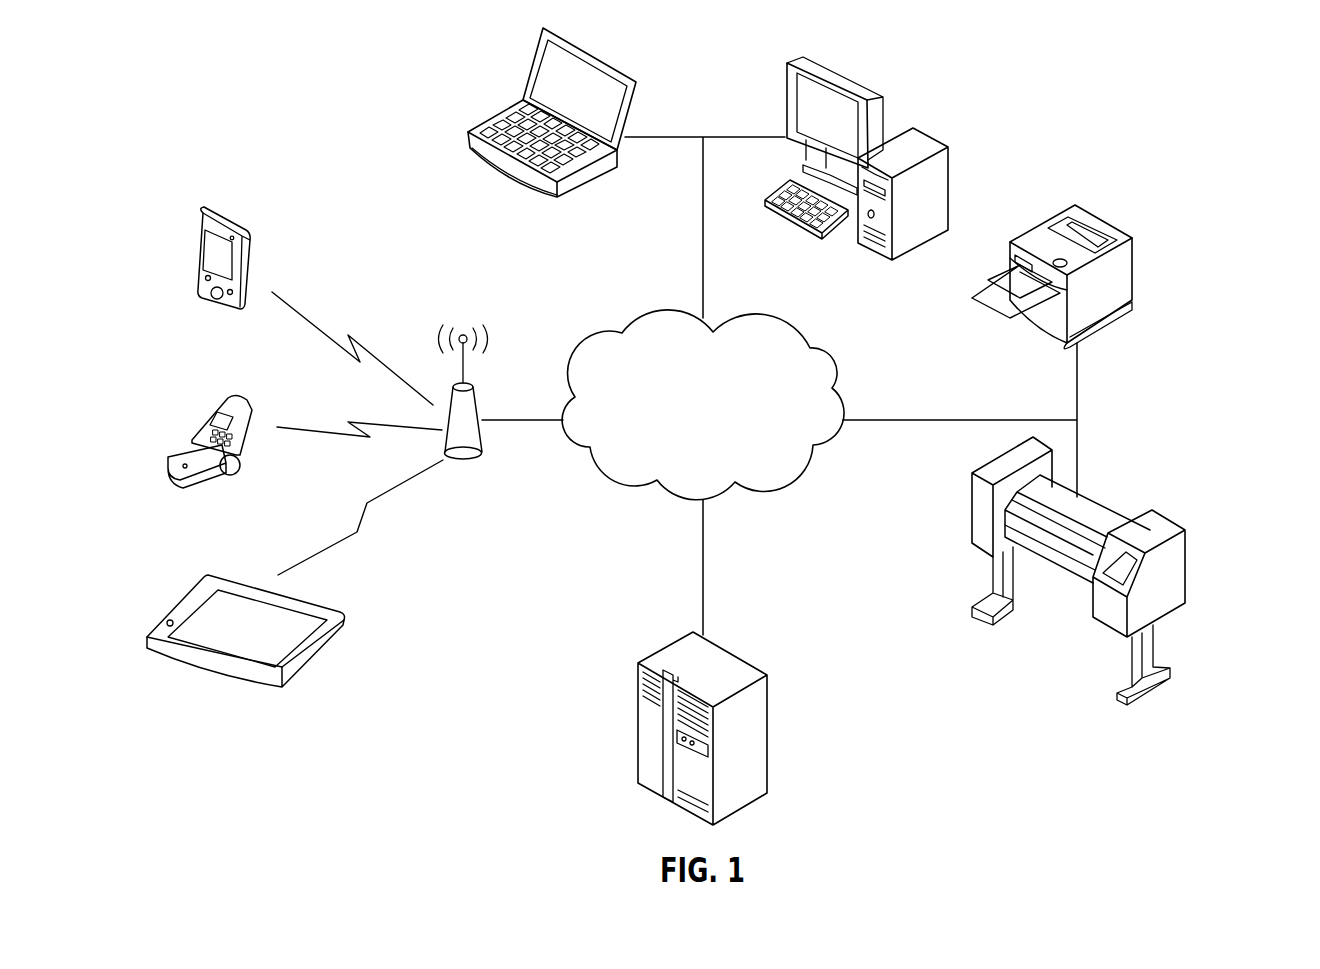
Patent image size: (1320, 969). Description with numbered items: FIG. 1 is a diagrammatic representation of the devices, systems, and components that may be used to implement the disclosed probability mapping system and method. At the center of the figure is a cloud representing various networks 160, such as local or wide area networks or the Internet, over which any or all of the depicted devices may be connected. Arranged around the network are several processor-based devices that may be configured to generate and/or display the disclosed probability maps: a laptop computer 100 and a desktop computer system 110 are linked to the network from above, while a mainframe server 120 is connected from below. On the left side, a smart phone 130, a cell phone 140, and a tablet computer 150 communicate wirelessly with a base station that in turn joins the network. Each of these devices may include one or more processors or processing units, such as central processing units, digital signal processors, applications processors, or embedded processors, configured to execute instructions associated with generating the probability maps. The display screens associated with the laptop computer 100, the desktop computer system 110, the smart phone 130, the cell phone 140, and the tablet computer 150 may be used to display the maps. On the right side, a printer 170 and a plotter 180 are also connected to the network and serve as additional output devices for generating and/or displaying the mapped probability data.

The laptop computer 100 is at (636, 82).
The desktop computer system 110 is at (883, 99).
The mainframe server 120 is at (768, 743).
The smart phone 130 is at (250, 250).
The cell phone 140 is at (250, 445).
The tablet computer 150 is at (323, 657).
The networks 160 is at (835, 363).
The printer 170 is at (1132, 262).
The plotter 180 is at (1185, 567).